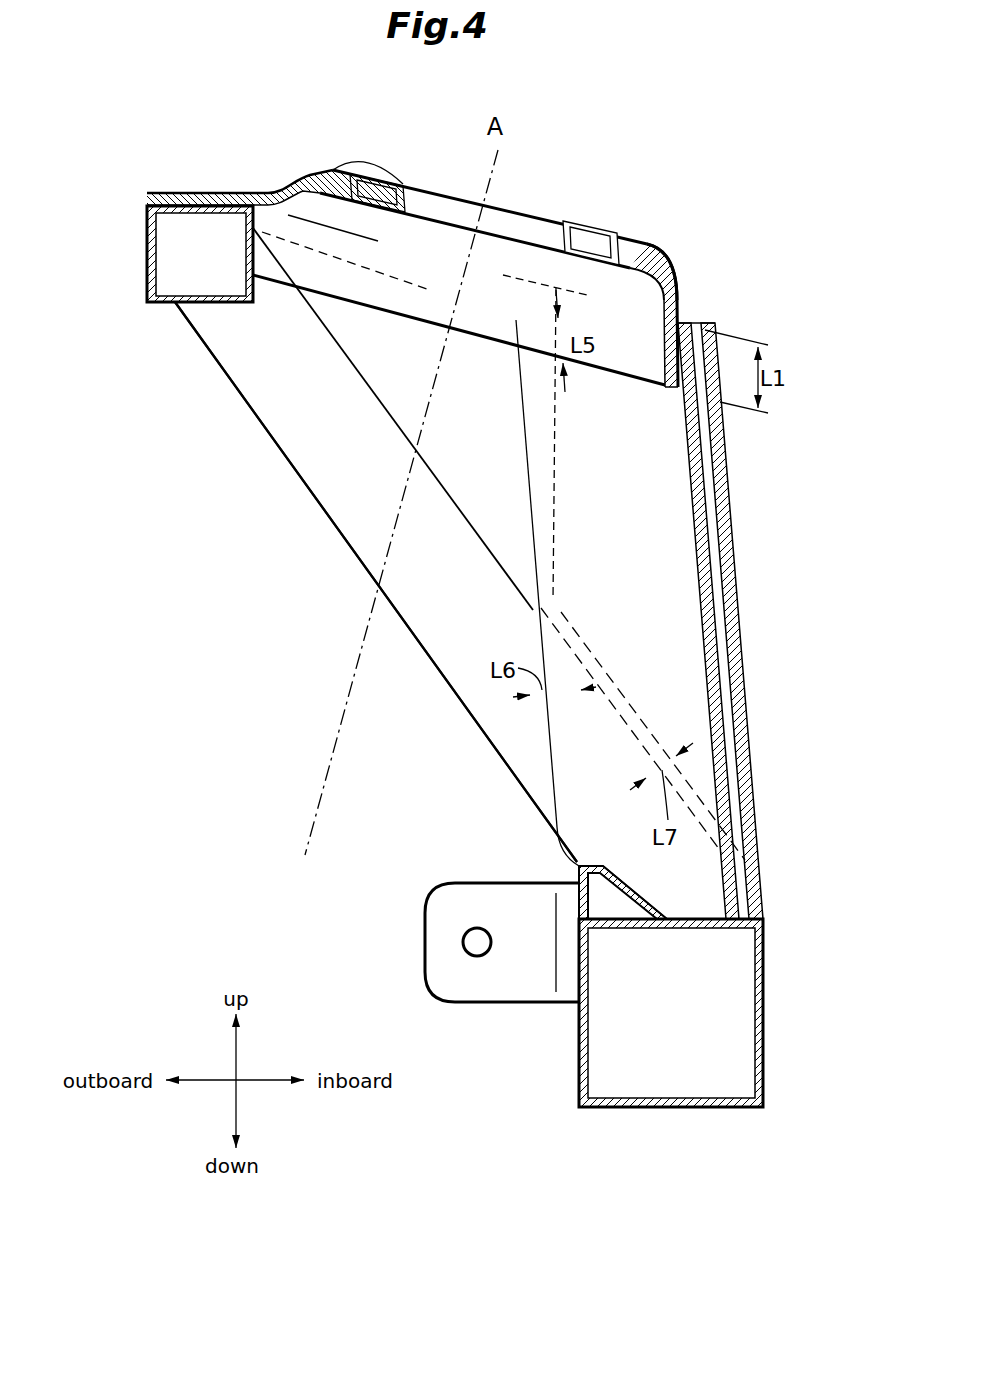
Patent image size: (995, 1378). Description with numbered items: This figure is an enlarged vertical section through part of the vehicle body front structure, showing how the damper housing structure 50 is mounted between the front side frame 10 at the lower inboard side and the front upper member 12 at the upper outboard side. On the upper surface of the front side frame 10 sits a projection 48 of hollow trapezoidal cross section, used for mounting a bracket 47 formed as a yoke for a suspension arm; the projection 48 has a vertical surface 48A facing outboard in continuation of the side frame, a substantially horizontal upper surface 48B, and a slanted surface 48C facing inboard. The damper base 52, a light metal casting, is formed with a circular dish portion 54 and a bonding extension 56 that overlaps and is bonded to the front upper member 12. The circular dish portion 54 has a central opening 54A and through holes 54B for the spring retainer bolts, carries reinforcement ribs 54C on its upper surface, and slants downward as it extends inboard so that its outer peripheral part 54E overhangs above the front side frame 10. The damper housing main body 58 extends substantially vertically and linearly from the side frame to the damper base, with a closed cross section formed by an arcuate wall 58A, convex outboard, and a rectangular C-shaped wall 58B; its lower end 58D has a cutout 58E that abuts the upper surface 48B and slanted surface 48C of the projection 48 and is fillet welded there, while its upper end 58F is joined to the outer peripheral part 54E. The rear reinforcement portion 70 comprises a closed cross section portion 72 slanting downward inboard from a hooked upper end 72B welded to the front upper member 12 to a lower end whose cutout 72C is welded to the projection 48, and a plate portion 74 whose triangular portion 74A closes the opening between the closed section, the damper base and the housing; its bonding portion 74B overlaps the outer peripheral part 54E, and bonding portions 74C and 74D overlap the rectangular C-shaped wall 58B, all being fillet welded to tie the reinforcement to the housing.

The front side frame 10 is at (766, 998).
The front upper member 12 is at (146, 262).
The bracket 47 is at (520, 990).
The projection 48 is at (658, 896).
The vertical surface 48A is at (583, 912).
The upper surface 48B is at (603, 860).
The slanted surface 48C is at (708, 862).
The damper housing structure 50 is at (698, 280).
The damper base 52 is at (304, 168).
The circular dish portion 54 is at (668, 260).
The central opening 54A is at (510, 210).
The through holes 54B is at (621, 258).
The reinforcement ribs 54C is at (360, 165).
The outer peripheral part 54E is at (670, 297).
The bonding extension 56 is at (180, 192).
The damper housing main body 58 is at (718, 621).
The arcuate wall 58A is at (688, 522).
The rectangular C-shaped wall 58B is at (722, 470).
The lower end 58D is at (716, 880).
The cutout 58E is at (583, 900).
The upper end 58F is at (683, 323).
The rear reinforcement portion 70 is at (226, 374).
The closed cross section portion 72 is at (310, 433).
The upper end 72B is at (246, 306).
The cutout 72C is at (553, 823).
The plate portion 74 is at (405, 382).
The triangular portion 74A is at (488, 428).
The bonding portion 74B is at (400, 290).
The bonding portion 74C is at (553, 432).
The bonding portion 74D is at (626, 700).